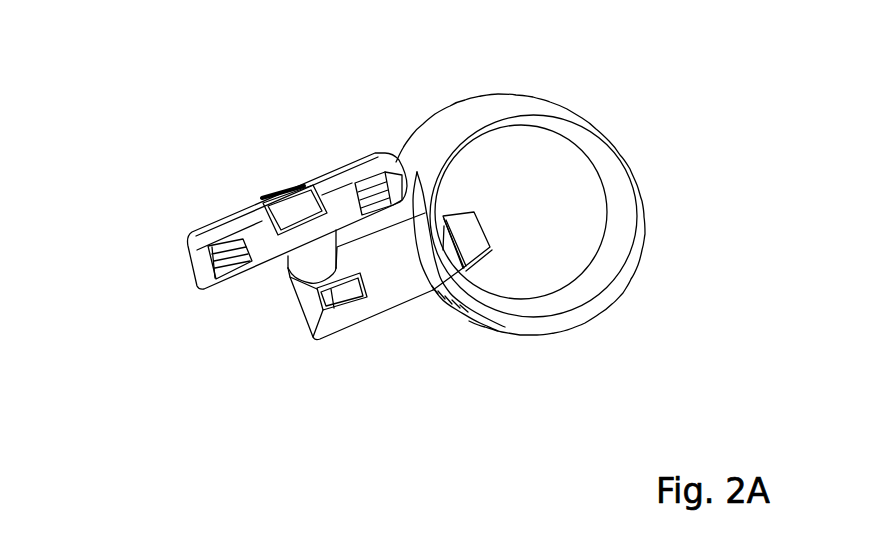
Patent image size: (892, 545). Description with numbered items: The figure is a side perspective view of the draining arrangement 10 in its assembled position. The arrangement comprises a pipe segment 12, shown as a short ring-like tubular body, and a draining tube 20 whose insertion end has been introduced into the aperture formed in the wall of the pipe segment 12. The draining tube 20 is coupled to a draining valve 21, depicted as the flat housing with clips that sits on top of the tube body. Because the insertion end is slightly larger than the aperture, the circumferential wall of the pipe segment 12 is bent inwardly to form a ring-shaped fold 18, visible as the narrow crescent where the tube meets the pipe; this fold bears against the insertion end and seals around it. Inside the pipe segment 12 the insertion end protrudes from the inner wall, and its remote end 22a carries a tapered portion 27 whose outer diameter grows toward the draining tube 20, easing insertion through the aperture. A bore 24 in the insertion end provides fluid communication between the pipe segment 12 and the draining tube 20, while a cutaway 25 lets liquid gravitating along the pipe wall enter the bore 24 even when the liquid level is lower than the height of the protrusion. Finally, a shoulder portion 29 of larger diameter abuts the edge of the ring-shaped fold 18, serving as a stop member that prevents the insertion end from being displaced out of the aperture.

The draining arrangement 10 is at (193, 190).
The pipe segment 12 is at (553, 112).
The ring-shaped fold 18 is at (434, 236).
The draining tube 20 is at (377, 300).
The draining valve 21 is at (247, 207).
The remote end 22a is at (490, 247).
The bore 24 is at (487, 233).
The cutaway 25 is at (462, 268).
The tapered portion 27 is at (466, 232).
The shoulder portion 29 is at (433, 290).